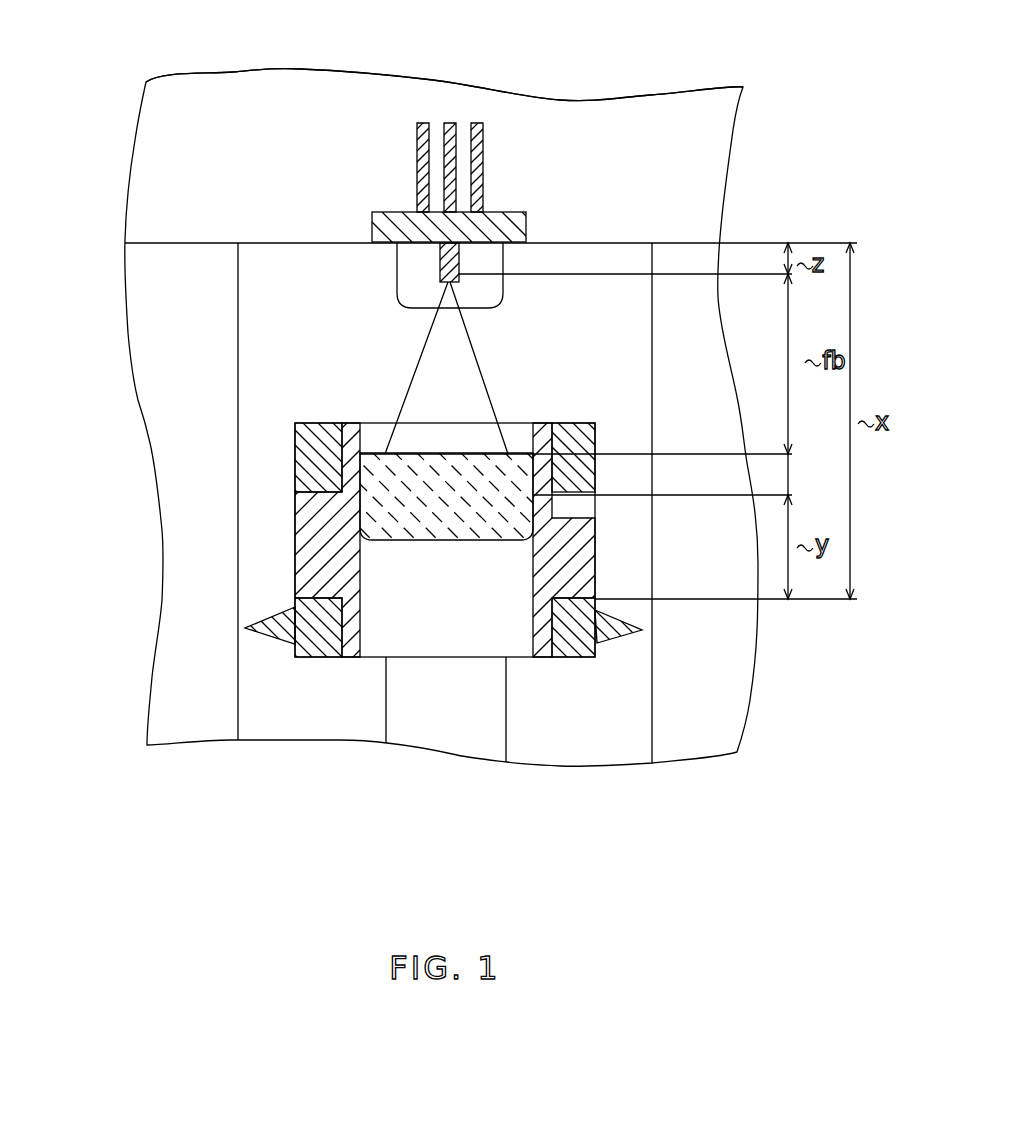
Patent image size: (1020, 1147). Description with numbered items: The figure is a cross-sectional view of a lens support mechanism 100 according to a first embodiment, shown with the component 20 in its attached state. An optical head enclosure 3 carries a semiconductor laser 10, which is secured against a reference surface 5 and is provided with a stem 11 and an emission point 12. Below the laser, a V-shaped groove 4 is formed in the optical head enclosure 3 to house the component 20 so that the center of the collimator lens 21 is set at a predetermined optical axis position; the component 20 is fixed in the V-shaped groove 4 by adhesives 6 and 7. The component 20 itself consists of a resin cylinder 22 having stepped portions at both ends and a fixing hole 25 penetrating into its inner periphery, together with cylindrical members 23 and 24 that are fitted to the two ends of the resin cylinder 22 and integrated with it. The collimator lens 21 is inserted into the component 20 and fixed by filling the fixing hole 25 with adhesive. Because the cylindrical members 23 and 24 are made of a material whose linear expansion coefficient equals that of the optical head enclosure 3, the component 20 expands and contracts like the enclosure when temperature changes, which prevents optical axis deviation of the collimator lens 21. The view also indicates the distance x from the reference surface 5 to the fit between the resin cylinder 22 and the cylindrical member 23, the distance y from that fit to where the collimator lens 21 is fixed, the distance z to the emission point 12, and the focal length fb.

The lens support mechanism 100 is at (797, 68).
The optical head enclosure 3 is at (573, 108).
The V-shaped groove 4 is at (248, 315).
The reference surface 5 is at (197, 243).
The adhesive 6 is at (280, 640).
The adhesive 7 is at (597, 643).
The semiconductor laser 10 is at (387, 218).
The stem 11 is at (440, 253).
The emission point 12 is at (440, 280).
The component 20 is at (590, 681).
The collimator lens 21 is at (460, 542).
The resin cylinder 22 is at (303, 528).
The cylindrical member 23 is at (297, 598).
The cylindrical member 24 is at (303, 458).
The fixing hole 25 is at (567, 513).